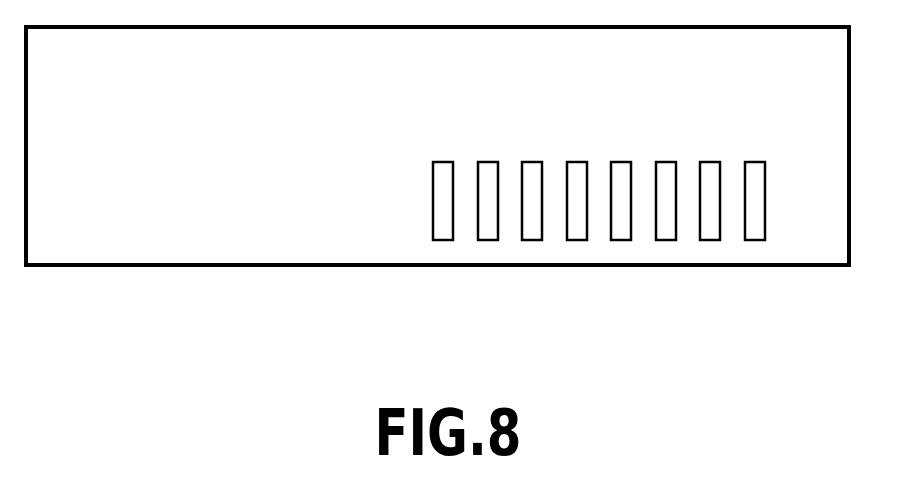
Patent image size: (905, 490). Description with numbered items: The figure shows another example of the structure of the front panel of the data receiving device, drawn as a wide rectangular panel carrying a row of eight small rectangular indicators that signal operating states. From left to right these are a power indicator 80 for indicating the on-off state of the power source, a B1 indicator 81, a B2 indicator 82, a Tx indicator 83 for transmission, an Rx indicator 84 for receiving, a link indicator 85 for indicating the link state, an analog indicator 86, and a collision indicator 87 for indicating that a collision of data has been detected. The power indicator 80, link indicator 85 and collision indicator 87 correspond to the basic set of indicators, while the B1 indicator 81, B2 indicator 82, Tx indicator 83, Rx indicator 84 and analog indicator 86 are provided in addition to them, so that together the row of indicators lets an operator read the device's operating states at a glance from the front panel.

The power indicator 80 is at (443, 240).
The B1 indicator 81 is at (487, 240).
The B2 indicator 82 is at (531, 240).
The Tx indicator 83 is at (575, 240).
The Rx indicator 84 is at (620, 240).
The link indicator 85 is at (665, 240).
The analog indicator 86 is at (710, 240).
The collision indicator 87 is at (754, 240).